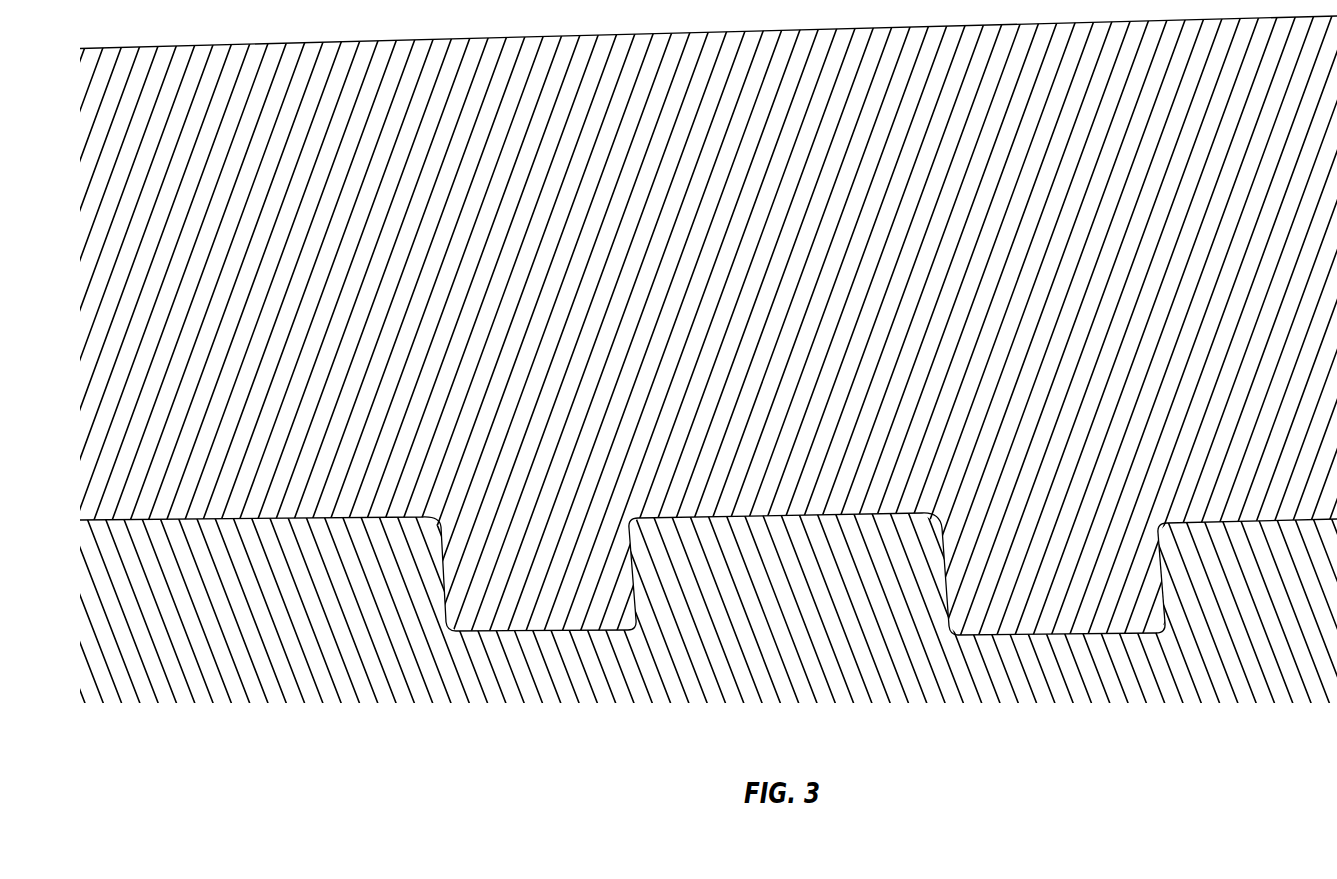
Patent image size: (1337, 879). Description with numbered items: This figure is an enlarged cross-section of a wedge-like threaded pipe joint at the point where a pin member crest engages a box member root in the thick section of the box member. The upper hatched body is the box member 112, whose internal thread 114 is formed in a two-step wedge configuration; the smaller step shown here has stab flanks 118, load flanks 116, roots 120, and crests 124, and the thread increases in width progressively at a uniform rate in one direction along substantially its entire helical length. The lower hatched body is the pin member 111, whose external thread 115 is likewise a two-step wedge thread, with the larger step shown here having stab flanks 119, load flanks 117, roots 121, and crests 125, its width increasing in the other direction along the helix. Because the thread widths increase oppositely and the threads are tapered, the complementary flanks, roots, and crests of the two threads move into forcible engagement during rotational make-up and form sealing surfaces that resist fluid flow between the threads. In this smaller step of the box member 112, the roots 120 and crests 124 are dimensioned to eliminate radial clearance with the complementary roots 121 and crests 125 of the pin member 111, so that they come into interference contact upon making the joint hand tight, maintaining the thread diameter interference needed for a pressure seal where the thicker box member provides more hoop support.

The pin member 111 is at (330, 648).
The box member 112 is at (566, 258).
The internal thread 114 is at (1071, 632).
The external thread 115 is at (309, 530).
The load flank 116 is at (1163, 567).
The load flank 117 is at (623, 543).
The stab flank 118 is at (942, 518).
The stab flank 119 is at (447, 547).
The root 120 is at (1248, 527).
The root 121 is at (488, 631).
The crest 124 is at (1117, 636).
The crest 125 is at (788, 513).